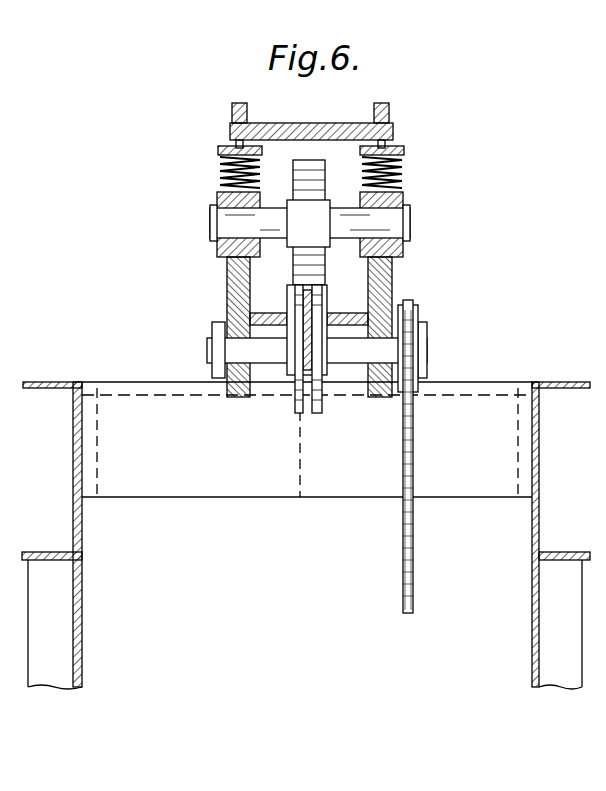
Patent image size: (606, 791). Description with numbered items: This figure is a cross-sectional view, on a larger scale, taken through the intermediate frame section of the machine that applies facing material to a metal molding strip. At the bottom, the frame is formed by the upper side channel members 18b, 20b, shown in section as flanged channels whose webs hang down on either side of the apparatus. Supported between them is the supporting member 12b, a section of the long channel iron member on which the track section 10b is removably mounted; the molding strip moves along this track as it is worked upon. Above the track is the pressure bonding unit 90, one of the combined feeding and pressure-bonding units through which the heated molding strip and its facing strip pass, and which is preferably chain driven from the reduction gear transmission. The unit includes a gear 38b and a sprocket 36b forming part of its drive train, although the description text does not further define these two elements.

The pressure bonding unit 90 is at (212, 161).
The gear 38b is at (310, 168).
The track section 10b is at (330, 296).
The supporting member section 12b is at (348, 317).
The sprocket 36b is at (300, 375).
The upper side channel member 18b is at (73, 466).
The upper side channel member 20b is at (539, 448).